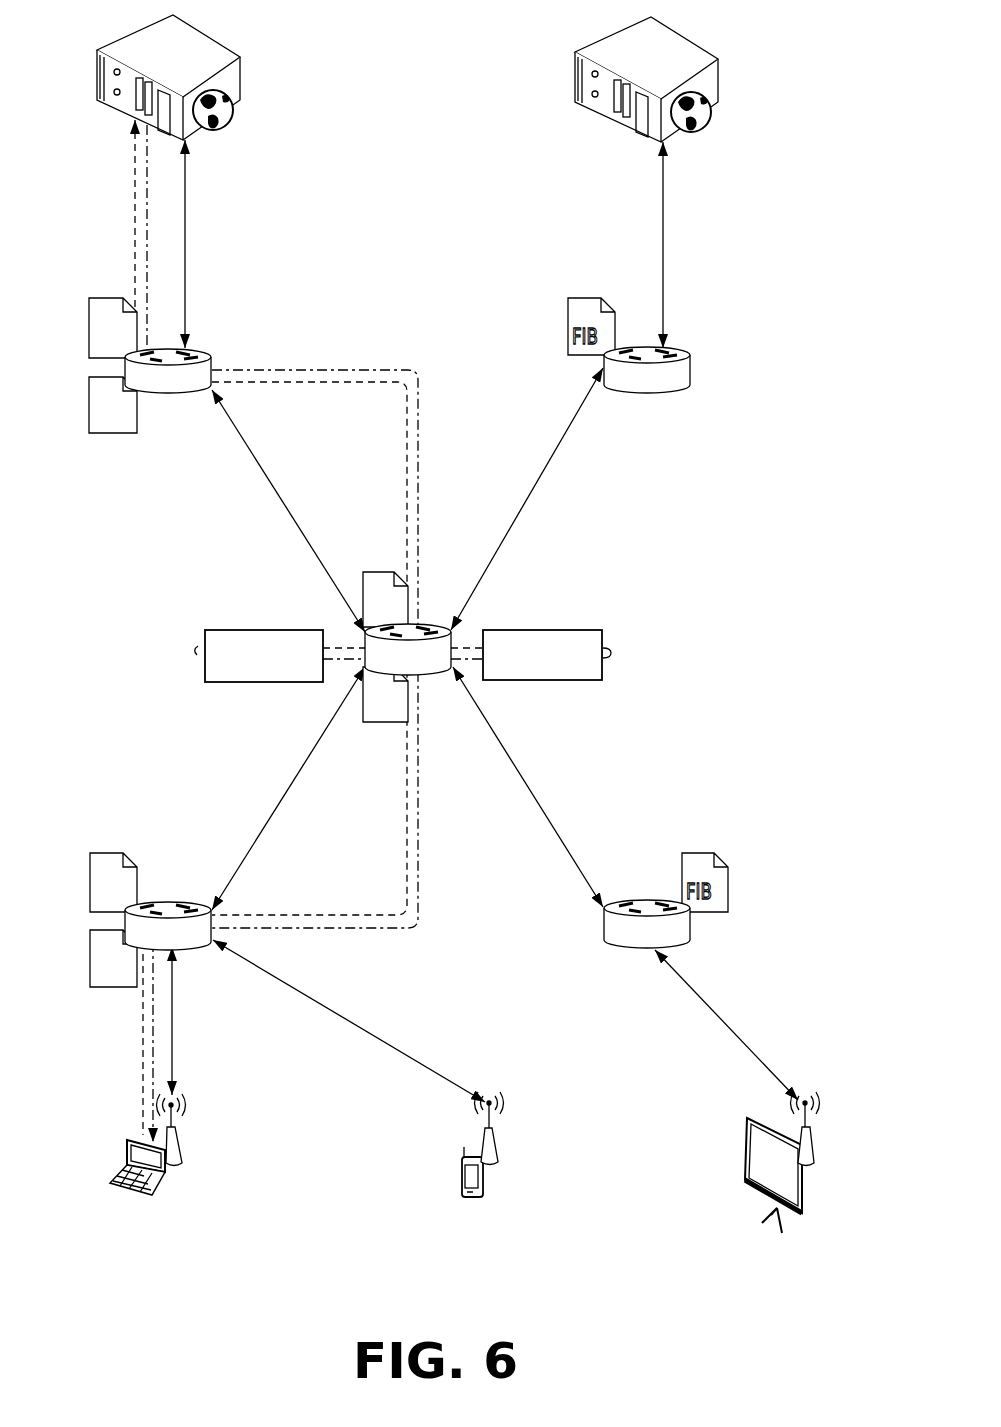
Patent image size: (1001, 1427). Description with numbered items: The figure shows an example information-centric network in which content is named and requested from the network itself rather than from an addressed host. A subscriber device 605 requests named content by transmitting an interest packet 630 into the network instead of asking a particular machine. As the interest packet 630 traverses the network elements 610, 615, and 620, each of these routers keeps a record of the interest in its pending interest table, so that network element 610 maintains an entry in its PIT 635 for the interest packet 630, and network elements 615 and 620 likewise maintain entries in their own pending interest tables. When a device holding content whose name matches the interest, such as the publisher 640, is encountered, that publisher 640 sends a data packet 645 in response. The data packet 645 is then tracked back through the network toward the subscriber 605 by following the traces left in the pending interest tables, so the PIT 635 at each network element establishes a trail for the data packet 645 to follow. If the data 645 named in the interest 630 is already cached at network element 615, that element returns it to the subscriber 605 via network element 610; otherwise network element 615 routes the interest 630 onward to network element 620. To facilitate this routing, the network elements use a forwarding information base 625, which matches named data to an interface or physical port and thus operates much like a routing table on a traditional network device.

The device 605 is at (128, 1142).
The network element 610 is at (185, 947).
The network element 615 is at (427, 668).
The network element 620 is at (212, 352).
The forwarding information base (FIB) 625 is at (90, 883).
The interest packet 630 is at (263, 630).
The pending interest table (PIT) 635 is at (90, 957).
The publisher 640 is at (138, 35).
The data packet 645 is at (545, 630).